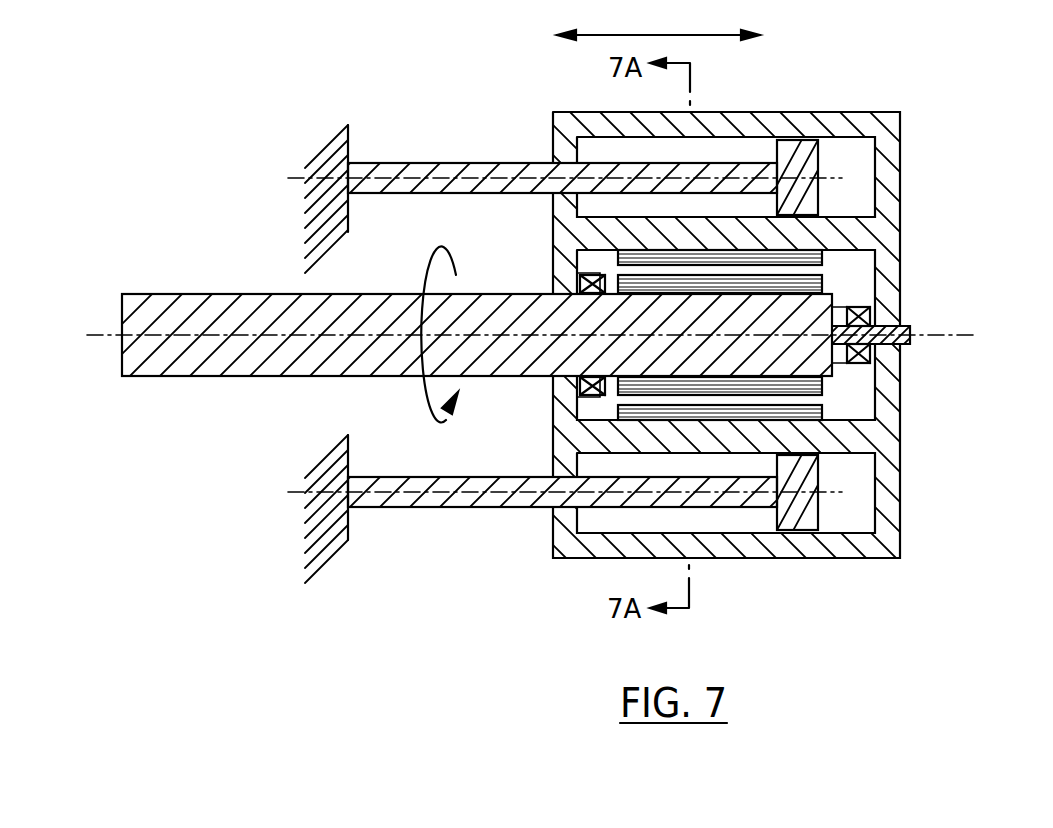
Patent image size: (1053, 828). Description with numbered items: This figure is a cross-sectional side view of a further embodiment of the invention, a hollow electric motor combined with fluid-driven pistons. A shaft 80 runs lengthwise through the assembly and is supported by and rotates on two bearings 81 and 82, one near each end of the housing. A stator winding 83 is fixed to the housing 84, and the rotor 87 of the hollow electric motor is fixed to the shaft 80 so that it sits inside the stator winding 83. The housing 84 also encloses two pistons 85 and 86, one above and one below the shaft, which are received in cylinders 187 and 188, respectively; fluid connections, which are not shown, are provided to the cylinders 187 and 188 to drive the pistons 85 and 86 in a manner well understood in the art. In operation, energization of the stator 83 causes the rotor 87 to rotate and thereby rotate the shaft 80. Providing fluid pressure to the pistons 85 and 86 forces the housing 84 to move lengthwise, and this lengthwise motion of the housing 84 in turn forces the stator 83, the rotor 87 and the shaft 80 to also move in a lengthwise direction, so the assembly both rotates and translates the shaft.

The shaft 80 is at (235, 362).
The bearing 81 is at (878, 318).
The bearing 82 is at (578, 284).
The stator winding 83 is at (823, 258).
The housing 84 is at (888, 140).
The piston 85 is at (754, 165).
The piston 86 is at (482, 507).
The rotor 87 is at (727, 392).
The cylinder 187 is at (853, 157).
The cylinder 188 is at (845, 518).